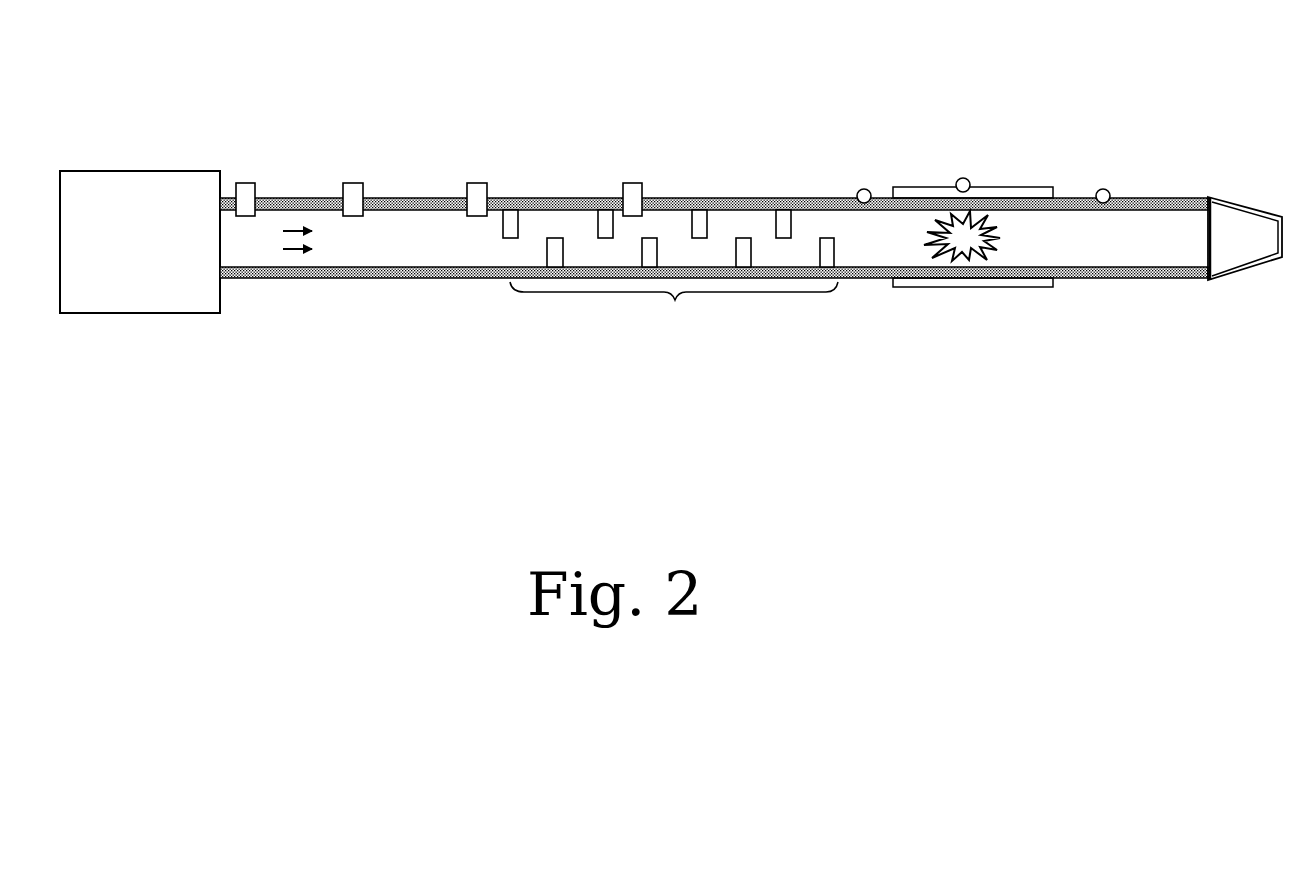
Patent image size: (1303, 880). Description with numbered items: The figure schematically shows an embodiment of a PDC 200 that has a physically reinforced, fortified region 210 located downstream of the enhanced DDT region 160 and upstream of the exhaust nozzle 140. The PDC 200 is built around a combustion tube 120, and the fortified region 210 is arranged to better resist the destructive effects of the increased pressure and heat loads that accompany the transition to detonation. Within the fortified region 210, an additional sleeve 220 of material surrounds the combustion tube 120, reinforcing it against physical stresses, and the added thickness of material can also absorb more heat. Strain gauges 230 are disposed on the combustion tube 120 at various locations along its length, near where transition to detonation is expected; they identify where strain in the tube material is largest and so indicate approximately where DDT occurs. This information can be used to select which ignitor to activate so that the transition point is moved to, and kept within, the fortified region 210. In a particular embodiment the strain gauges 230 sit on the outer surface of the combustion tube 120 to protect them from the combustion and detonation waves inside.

The PDC 200 is at (503, 97).
The combustion tube 120 is at (398, 278).
The exhaust nozzle 140 is at (1242, 200).
The enhanced DDT region 160 is at (672, 310).
The fortified region 210 is at (1065, 338).
The additional sleeve 220 is at (935, 287).
The strain gauges 230 is at (1090, 185).